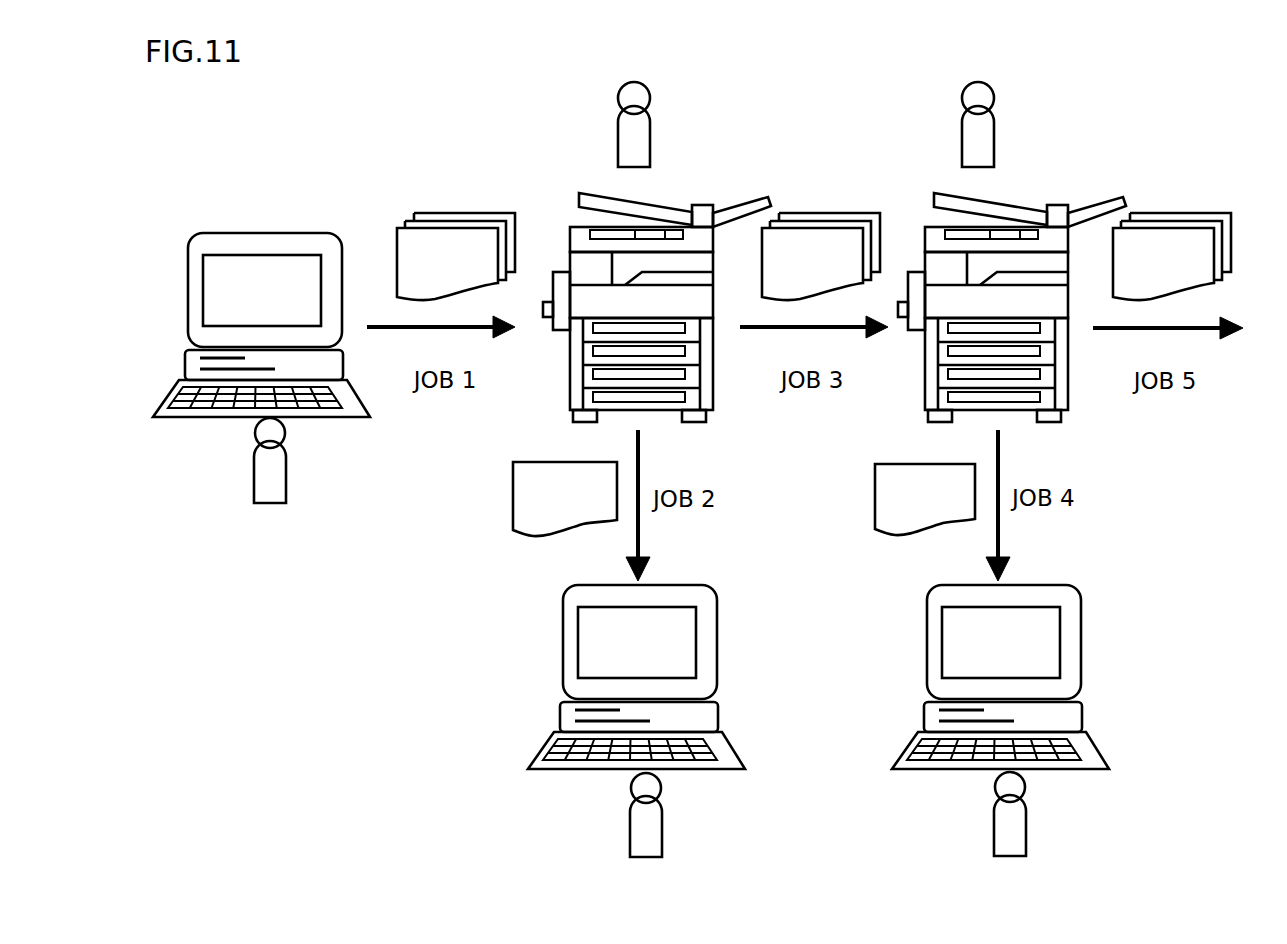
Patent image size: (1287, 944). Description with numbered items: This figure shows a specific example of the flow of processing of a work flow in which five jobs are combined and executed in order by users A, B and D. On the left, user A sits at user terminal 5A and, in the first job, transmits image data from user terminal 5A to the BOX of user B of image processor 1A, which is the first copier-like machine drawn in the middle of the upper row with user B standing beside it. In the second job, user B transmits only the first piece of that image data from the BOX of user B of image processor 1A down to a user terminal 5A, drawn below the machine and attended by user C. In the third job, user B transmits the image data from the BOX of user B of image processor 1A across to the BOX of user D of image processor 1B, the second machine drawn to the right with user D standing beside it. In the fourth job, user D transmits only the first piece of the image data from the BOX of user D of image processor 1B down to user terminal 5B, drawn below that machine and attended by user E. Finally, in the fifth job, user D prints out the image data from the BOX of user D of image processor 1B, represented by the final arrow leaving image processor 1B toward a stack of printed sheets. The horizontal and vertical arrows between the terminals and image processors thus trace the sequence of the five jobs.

The image processor 1A is at (703, 205).
The image processor 1B is at (1058, 205).
The user terminal 5A is at (266, 233).
The user terminal 5B is at (1081, 634).
The user A is at (270, 474).
The user B is at (634, 111).
The user C is at (646, 829).
The user D is at (978, 111).
The user E is at (1010, 828).